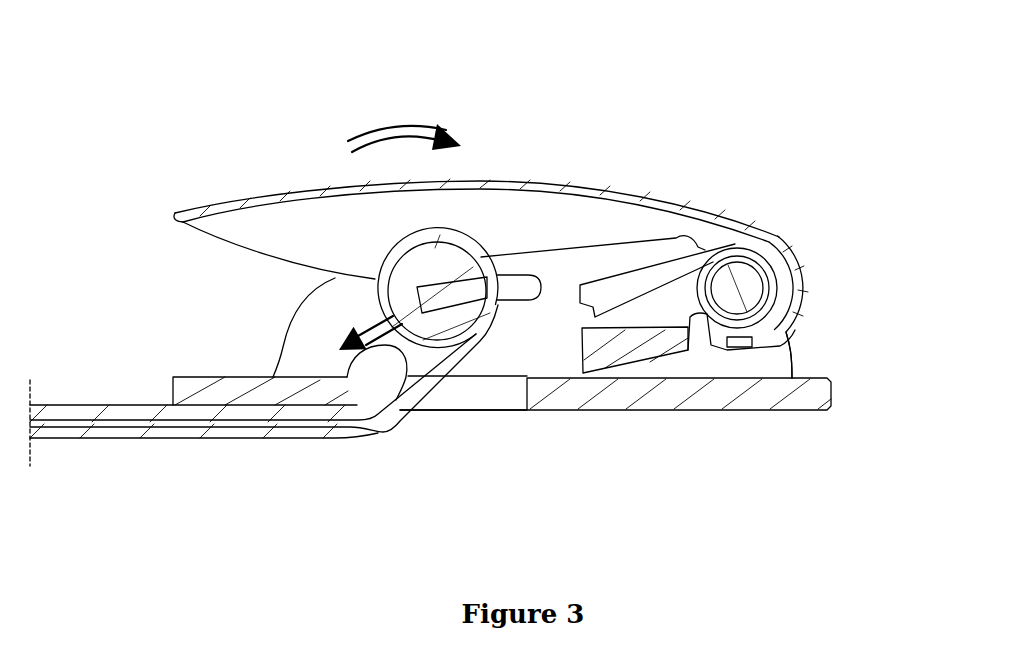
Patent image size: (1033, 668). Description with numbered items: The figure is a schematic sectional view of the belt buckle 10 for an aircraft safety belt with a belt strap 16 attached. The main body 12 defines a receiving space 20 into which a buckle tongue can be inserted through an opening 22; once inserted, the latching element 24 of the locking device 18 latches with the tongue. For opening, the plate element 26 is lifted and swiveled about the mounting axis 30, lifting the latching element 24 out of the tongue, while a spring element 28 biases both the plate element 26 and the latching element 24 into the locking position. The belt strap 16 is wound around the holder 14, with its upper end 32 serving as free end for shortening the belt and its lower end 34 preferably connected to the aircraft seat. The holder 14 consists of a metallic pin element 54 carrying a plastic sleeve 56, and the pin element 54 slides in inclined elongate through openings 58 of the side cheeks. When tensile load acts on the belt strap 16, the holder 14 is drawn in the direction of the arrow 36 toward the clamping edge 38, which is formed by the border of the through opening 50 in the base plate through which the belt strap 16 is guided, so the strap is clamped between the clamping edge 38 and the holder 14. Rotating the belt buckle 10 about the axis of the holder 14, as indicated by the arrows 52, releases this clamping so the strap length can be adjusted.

The belt buckle 10 is at (786, 147).
The main body 12 is at (638, 395).
The holder 14 is at (478, 217).
The belt strap 16 is at (362, 432).
The locking device 18 is at (813, 244).
The receiving space 20 is at (513, 347).
The opening 22 is at (775, 362).
The latching element 24 is at (640, 355).
The plate element 26 is at (597, 187).
The spring element 28 is at (740, 262).
The mounting axis 30 is at (740, 288).
The upper end 32 is at (77, 410).
The lower end 34 is at (172, 438).
The arrow 36 is at (368, 315).
The clamping edge 38 is at (386, 357).
The through opening 50 is at (484, 394).
The arrows 52 is at (398, 128).
The pin element 54 is at (440, 297).
The sleeve 56 is at (403, 287).
The elongate through openings 58 is at (512, 288).